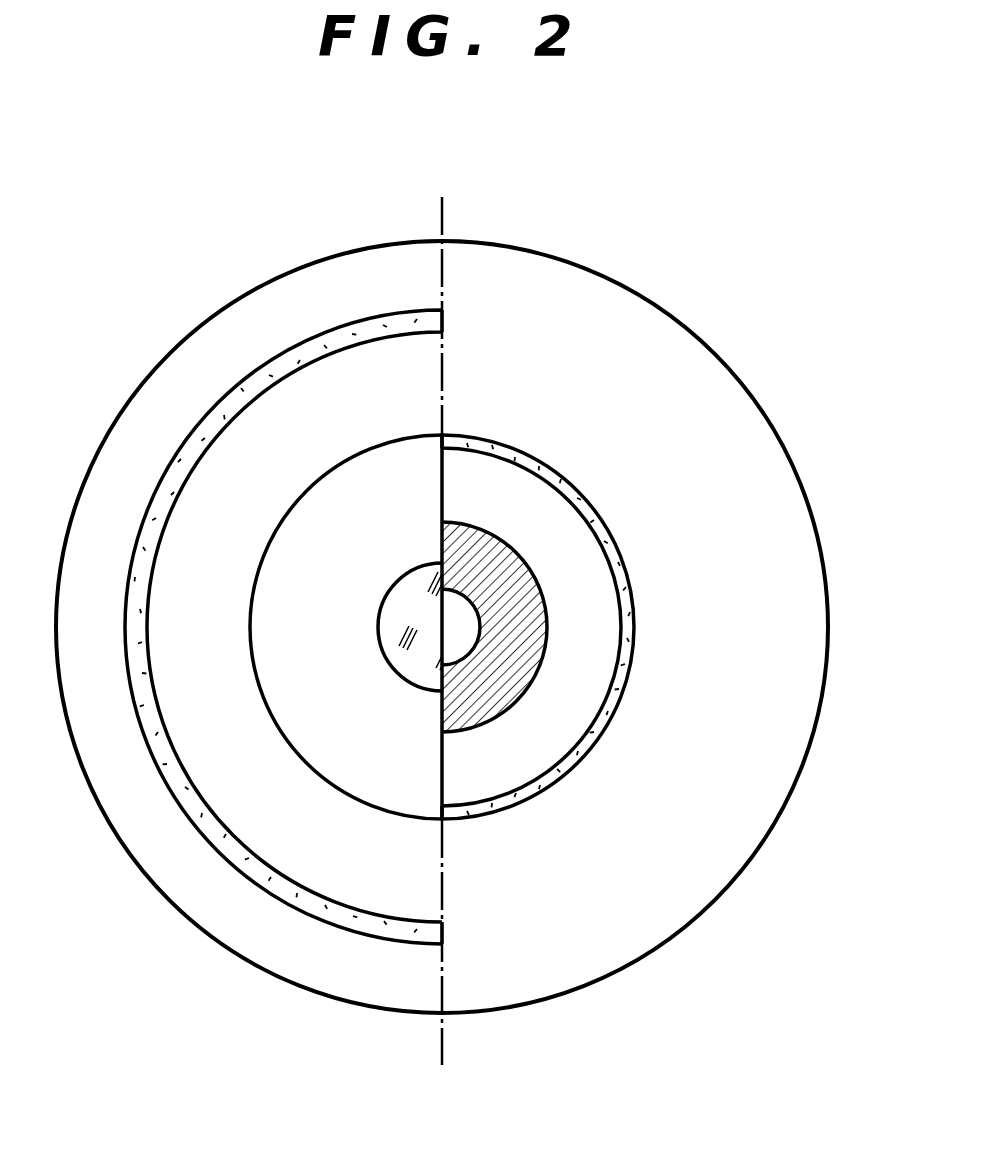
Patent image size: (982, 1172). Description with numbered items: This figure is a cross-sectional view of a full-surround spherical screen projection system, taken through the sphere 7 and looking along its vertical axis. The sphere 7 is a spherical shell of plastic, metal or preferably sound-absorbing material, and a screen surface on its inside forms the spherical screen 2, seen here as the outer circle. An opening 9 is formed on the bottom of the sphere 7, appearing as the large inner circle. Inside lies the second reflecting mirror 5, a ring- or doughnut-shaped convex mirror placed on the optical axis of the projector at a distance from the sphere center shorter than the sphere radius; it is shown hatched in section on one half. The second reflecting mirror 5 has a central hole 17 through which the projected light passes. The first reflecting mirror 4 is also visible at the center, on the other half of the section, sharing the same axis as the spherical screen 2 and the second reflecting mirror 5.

The spherical screen 2 is at (317, 342).
The first reflecting mirror 4 is at (395, 627).
The second reflecting mirror 5 is at (492, 567).
The sphere 7 is at (673, 348).
The opening 9 is at (355, 765).
The central hole 17 is at (462, 637).